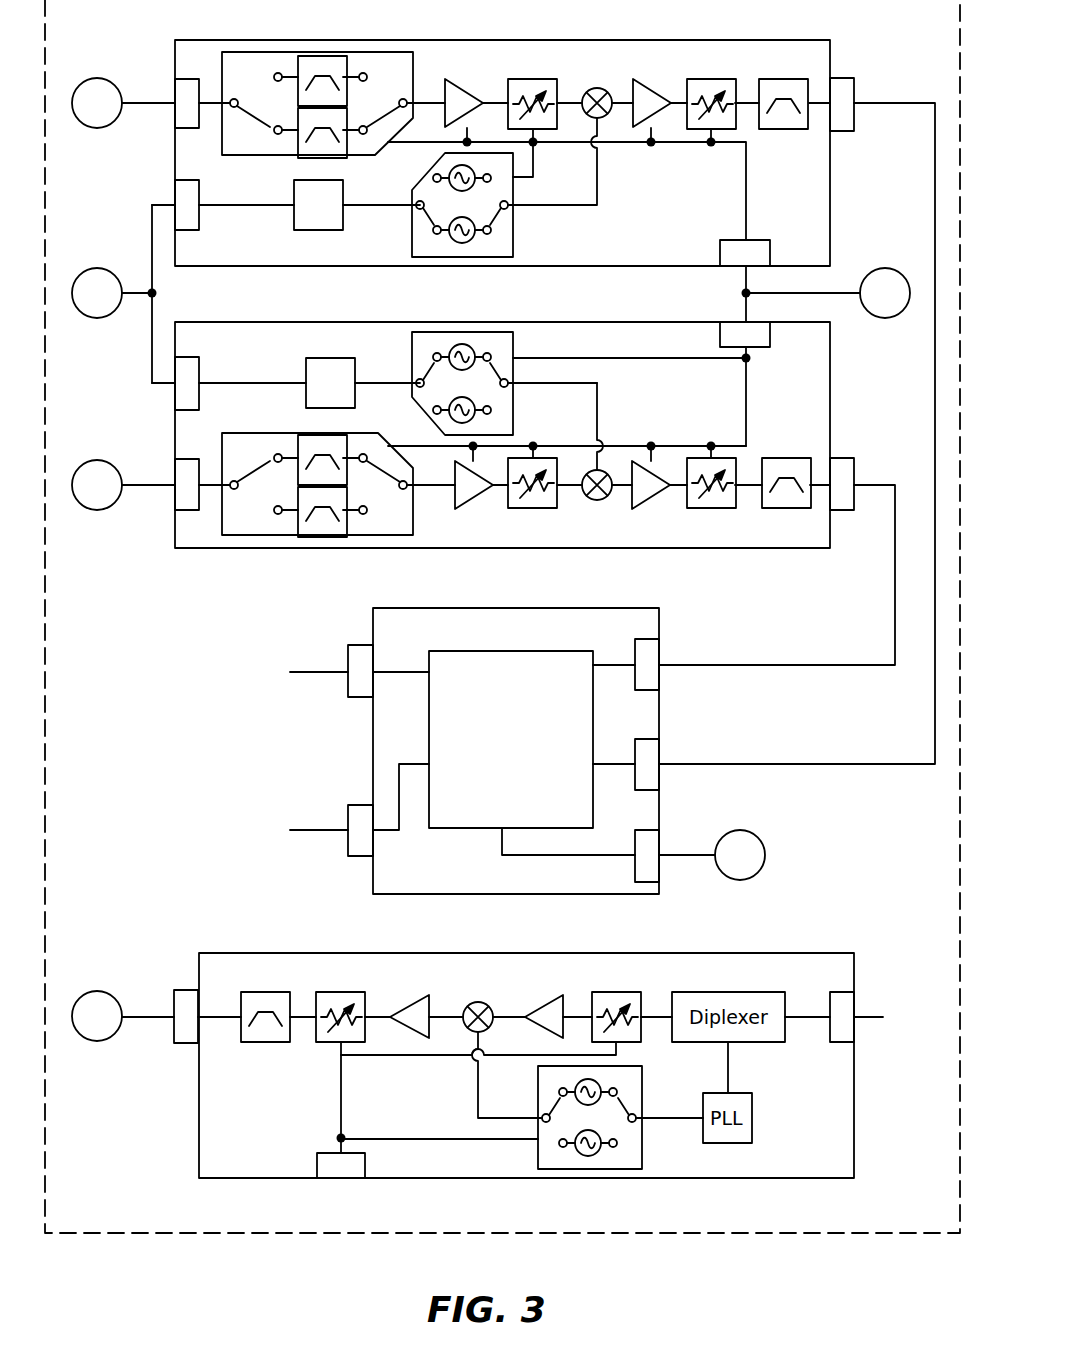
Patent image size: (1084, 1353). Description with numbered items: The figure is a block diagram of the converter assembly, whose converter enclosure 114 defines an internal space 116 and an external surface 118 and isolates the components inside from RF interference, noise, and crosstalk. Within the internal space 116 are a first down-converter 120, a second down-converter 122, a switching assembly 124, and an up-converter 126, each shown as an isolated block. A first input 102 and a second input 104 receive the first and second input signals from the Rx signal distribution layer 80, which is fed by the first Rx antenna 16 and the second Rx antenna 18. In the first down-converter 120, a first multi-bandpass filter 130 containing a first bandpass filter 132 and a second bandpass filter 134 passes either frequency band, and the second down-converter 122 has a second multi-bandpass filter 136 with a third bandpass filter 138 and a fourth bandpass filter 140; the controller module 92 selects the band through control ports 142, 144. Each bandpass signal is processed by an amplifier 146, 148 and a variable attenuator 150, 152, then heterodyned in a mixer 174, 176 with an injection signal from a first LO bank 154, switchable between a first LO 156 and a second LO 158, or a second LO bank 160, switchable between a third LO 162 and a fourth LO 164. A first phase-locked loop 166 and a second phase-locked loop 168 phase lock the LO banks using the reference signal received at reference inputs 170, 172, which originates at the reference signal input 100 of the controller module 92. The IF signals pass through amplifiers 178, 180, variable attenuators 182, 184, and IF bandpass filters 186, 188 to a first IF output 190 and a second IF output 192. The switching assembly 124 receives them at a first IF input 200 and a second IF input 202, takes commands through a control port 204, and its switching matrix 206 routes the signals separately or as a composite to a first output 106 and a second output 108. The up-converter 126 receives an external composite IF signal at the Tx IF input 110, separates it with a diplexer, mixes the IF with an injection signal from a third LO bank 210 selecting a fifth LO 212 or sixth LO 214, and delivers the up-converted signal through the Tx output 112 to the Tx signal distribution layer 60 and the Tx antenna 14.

The Tx antenna 14 is at (104, 992).
The first Rx antenna 16 is at (104, 79).
The second Rx antenna 18 is at (97, 460).
The Tx signal distribution layer 60 is at (97, 991).
The Rx signal distribution layer 80 is at (97, 78).
The controller module 92 is at (885, 268).
The reference signal input 100 is at (97, 268).
The first input 102 is at (185, 128).
The second input 104 is at (187, 512).
The first output 106 is at (347, 660).
The second output 108 is at (347, 820).
The Tx IF input 110 is at (845, 992).
The Tx output 112 is at (187, 1043).
The converter enclosure 114 is at (210, 1233).
The internal space 116 is at (310, 1236).
The external surface 118 is at (370, 1240).
The first down-converter 120 is at (535, 40).
The second down-converter 122 is at (535, 548).
The switching assembly 124 is at (535, 894).
The up-converter 126 is at (633, 1178).
The first multi-bandpass filter 130 is at (317, 101).
The first bandpass filter 132 is at (340, 153).
The second bandpass filter 134 is at (343, 72).
The second multi-bandpass filter 136 is at (319, 488).
The third bandpass filter 138 is at (328, 532).
The fourth bandpass filter 140 is at (345, 447).
The control port 142 is at (772, 253).
The control port 144 is at (773, 332).
The amplifier 146 is at (468, 97).
The amplifier 148 is at (473, 497).
The variable attenuator 150 is at (533, 79).
The variable attenuator 152 is at (533, 510).
The first LO bank 154 is at (480, 221).
The first LO 156 is at (474, 242).
The second LO 158 is at (446, 172).
The second LO bank 160 is at (502, 367).
The third LO 162 is at (475, 422).
The fourth LO 164 is at (476, 350).
The first phase-locked loop 166 is at (318, 230).
The second phase-locked loop 168 is at (330, 358).
The reference input 170 is at (190, 230).
The reference input 172 is at (188, 357).
The mixer 174 is at (597, 88).
The mixer 176 is at (598, 500).
The amplifier 178 is at (636, 122).
The amplifier 180 is at (632, 463).
The variable attenuator 182 is at (710, 79).
The variable attenuator 184 is at (712, 510).
The IF bandpass filter 186 is at (777, 129).
The IF bandpass filter 188 is at (773, 458).
The first IF output 190 is at (843, 78).
The second IF output 192 is at (842, 510).
The first IF input 200 is at (662, 752).
The second IF input 202 is at (662, 651).
The control port 204 is at (662, 868).
The switching matrix 206 is at (510, 651).
The third LO bank 210 is at (619, 1136).
The fifth LO 212 is at (597, 1079).
The sixth LO 214 is at (594, 1157).